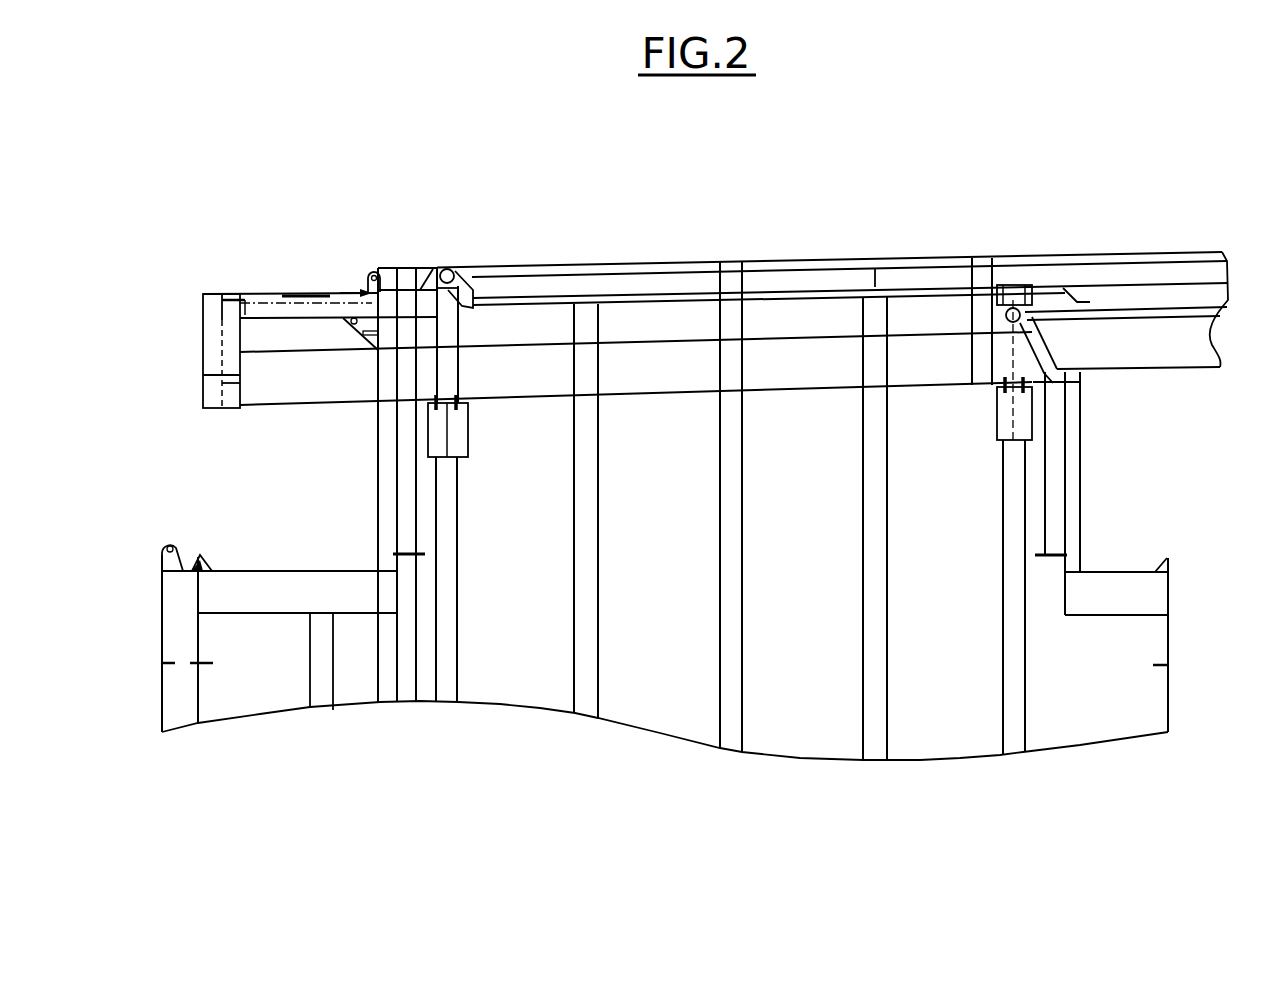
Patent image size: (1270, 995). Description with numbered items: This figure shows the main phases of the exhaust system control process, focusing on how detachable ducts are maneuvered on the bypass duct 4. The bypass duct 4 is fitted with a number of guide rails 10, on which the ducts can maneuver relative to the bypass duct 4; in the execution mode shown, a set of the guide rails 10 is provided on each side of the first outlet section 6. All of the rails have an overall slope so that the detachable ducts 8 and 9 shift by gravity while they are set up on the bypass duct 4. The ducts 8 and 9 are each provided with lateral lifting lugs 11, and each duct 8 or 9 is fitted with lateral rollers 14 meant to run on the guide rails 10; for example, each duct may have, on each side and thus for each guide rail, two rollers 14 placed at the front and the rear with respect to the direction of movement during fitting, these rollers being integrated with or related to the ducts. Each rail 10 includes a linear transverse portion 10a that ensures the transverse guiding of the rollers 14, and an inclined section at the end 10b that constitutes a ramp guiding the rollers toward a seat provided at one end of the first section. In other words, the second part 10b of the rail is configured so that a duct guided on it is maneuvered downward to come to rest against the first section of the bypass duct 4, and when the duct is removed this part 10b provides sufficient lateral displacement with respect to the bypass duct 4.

The bypass duct 4 is at (391, 494).
The first outlet section 6 is at (664, 330).
The detachable duct 8 is at (397, 258).
The detachable duct 9 is at (198, 562).
The guide rail 10 is at (190, 306).
The linear transverse portion 10a is at (826, 258).
The inclined section at the end 10b is at (470, 266).
The lateral lifting lug 11 is at (361, 272).
The lateral roller 14 is at (450, 258).